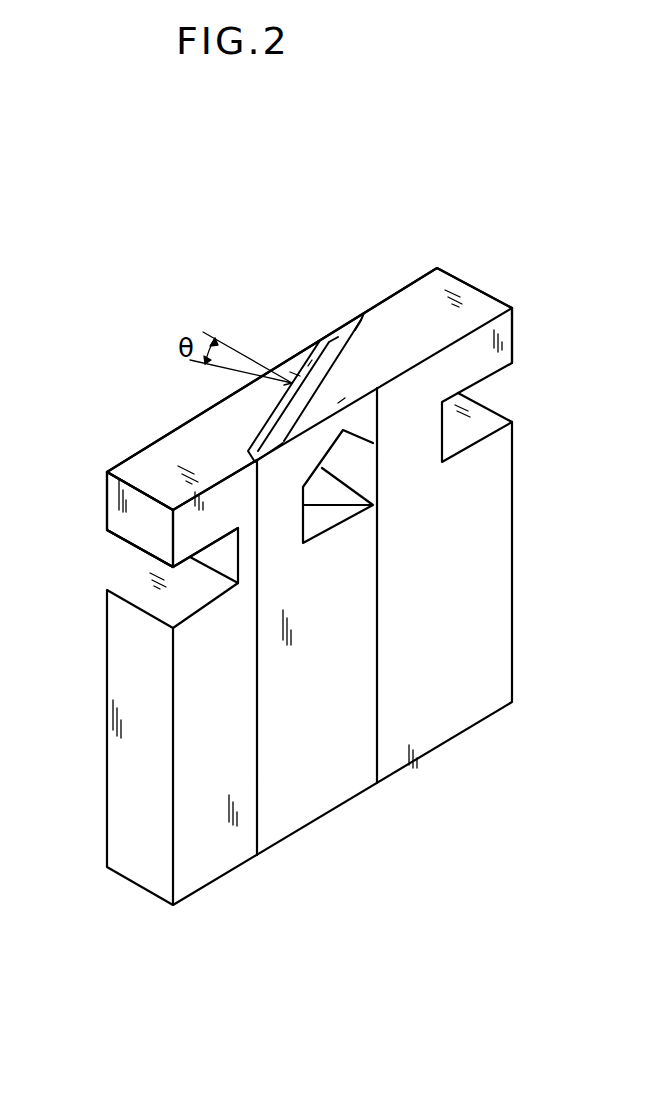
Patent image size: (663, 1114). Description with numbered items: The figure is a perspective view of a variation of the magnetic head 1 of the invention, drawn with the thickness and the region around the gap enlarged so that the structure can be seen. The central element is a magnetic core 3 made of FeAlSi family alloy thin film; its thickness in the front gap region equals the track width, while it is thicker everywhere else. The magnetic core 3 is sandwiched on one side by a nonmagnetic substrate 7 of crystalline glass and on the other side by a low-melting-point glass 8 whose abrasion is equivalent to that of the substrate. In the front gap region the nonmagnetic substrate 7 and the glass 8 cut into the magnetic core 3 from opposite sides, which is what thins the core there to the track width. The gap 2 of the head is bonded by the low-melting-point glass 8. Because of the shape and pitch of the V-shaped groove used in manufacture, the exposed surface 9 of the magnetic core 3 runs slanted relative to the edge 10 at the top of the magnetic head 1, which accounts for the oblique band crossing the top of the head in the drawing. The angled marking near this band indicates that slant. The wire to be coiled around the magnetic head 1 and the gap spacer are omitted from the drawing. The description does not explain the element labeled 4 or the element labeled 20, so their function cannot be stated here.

The magnetic head 1 is at (484, 740).
The gap 2 is at (303, 372).
The magnetic core 3 is at (360, 324).
The slot 4 is at (368, 481).
The nonmagnetic substrate 7 is at (416, 297).
The low-melting-point glass 8 is at (290, 372).
The exposed surface 9 is at (220, 434).
The edge 10 is at (108, 471).
The groove edge 20 is at (312, 360).